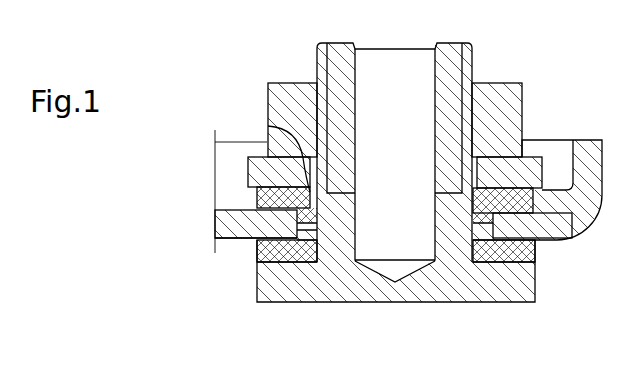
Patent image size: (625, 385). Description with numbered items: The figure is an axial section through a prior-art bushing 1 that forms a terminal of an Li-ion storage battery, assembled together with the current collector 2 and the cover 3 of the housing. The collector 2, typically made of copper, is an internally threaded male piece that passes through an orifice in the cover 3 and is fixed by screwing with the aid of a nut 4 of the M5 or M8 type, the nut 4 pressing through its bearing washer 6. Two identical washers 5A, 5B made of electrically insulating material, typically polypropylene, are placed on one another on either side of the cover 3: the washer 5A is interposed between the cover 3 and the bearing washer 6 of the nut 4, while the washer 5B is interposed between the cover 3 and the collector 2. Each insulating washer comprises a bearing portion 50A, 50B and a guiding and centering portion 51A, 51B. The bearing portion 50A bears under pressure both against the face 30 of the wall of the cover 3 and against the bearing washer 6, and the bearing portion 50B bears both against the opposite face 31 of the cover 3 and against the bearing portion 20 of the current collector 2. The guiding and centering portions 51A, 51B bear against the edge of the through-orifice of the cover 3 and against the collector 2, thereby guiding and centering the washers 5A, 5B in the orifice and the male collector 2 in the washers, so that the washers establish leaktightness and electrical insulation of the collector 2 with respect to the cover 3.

The bushing 1 is at (219, 52).
The current collector 2 is at (478, 290).
The cover 3 is at (223, 224).
The nut 4 is at (500, 92).
The insulating washer 5A is at (533, 200).
The insulating washer 5B is at (523, 252).
The bearing washer 6 is at (533, 142).
The bearing portion of the current collector 20 is at (283, 270).
The face of the wall of the cover 30 is at (257, 190).
The opposite face of the cover 31 is at (222, 252).
The bearing portion 50A is at (253, 200).
The bearing portion 50B is at (267, 252).
The guiding and centering portion 51A is at (268, 126).
The guiding and centering portion 51B is at (303, 253).